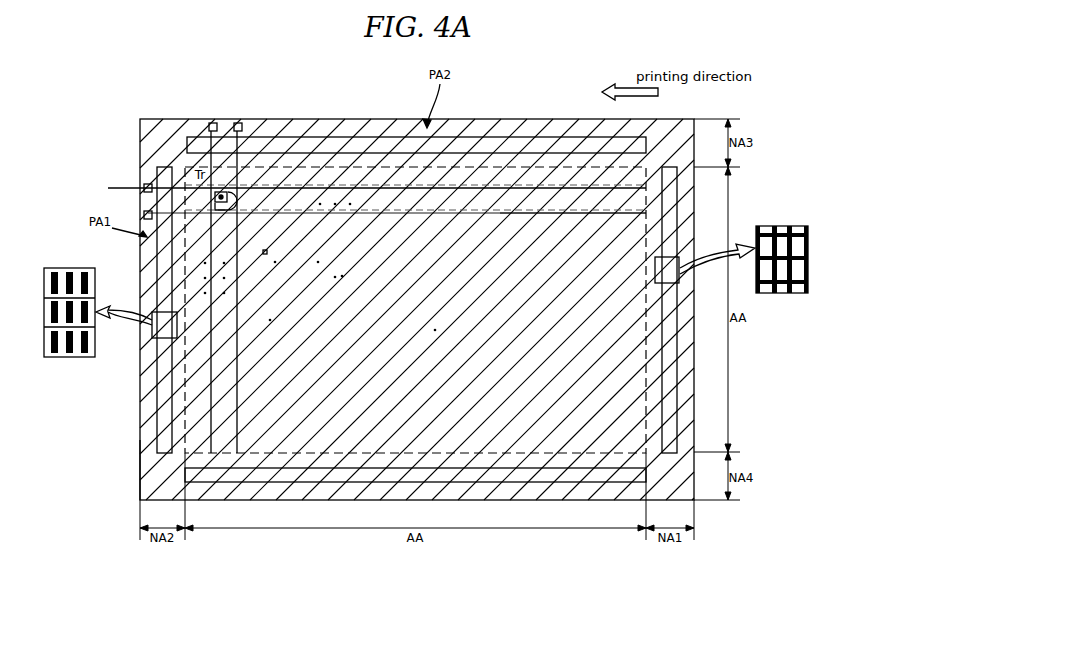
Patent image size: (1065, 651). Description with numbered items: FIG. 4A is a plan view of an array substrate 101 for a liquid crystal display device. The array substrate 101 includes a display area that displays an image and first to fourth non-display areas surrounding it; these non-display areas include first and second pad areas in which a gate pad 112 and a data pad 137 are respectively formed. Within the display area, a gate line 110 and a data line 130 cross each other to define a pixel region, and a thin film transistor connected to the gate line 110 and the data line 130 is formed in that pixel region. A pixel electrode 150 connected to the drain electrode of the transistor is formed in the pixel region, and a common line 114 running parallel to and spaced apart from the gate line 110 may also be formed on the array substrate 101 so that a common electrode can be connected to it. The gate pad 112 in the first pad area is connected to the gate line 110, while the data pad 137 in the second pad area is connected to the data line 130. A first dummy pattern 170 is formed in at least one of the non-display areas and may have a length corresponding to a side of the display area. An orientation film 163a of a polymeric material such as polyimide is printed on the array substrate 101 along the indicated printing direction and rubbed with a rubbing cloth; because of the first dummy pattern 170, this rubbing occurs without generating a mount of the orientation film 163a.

The array substrate 101 is at (528, 94).
The gate line 110 is at (380, 215).
The gate pad 112 is at (365, 200).
The common line 114 is at (497, 213).
The data line 130 is at (238, 291).
The data pad 137 is at (240, 123).
The pixel electrode 150 is at (231, 214).
The orientation film 163a is at (153, 462).
The first dummy pattern 170 is at (466, 137).